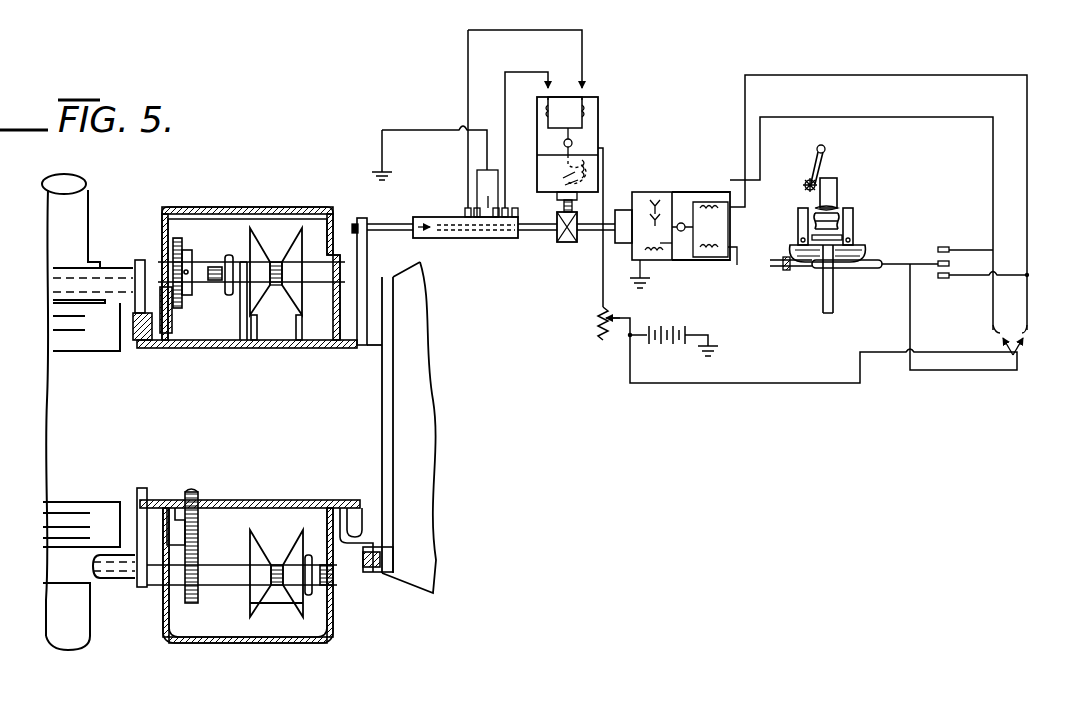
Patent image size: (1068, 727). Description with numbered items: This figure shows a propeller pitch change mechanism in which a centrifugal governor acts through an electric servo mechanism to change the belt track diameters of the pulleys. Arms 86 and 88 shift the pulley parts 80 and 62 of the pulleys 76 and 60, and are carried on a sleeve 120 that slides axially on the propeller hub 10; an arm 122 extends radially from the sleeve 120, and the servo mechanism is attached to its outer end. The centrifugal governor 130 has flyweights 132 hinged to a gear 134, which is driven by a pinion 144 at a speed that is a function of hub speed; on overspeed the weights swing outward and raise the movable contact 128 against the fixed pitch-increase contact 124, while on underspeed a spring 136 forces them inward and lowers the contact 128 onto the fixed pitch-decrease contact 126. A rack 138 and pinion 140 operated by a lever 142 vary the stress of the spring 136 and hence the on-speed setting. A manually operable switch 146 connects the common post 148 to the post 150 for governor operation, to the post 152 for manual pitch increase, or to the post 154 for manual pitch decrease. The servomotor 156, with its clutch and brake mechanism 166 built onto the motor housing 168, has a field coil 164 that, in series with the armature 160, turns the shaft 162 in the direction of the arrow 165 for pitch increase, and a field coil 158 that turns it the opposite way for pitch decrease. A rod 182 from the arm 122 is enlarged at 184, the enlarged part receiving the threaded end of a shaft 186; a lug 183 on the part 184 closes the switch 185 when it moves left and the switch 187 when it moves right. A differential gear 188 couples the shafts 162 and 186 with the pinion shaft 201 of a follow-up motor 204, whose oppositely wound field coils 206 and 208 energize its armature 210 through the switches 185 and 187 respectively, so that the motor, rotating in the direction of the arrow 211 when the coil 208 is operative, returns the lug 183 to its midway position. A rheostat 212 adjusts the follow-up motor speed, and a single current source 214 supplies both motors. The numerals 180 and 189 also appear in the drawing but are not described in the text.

The propeller hub 10 is at (226, 492).
The variable pulley 60 is at (277, 558).
The pulley part 62 is at (300, 594).
The variable pulley 76 is at (276, 292).
The pulley part 80 is at (253, 250).
The arm 86 is at (238, 314).
The arm 88 is at (312, 500).
The sleeve 120 is at (264, 350).
The arm 122 is at (367, 262).
The fixed pitch-increase contact 124 is at (940, 246).
The fixed pitch-decrease contact 126 is at (941, 278).
The movable contact 128 is at (933, 303).
The centrifugal governor 130 is at (845, 200).
The flyweights 132 is at (853, 226).
The gear 134 is at (862, 252).
The spring 136 is at (838, 212).
The rack 138 is at (838, 186).
The pinion 140 is at (812, 180).
The lever 142 is at (818, 147).
The pinion 144 is at (795, 272).
The manually operable switch 146 is at (1016, 357).
The common post 148 is at (1019, 378).
The post 150 is at (1013, 371).
The post 152 is at (997, 333).
The post 154 is at (1013, 315).
The servomotor 156 is at (718, 190).
The field coil 158 is at (793, 182).
The armature 160 is at (705, 204).
The shaft 162 is at (640, 203).
The field coil 164 is at (715, 259).
The arrow 165 is at (684, 222).
The clutch and brake mechanism 166 is at (700, 270).
The motor housing 168 is at (728, 254).
The ground lead 180 is at (700, 272).
The rod 182 is at (387, 223).
The lug 183 is at (490, 193).
The enlarged part 184 is at (447, 236).
The switch 185 is at (466, 213).
The shaft 186 is at (550, 231).
The switch 187 is at (509, 213).
The differential gear 188 is at (568, 250).
The lead 189 is at (413, 219).
The pinion shaft 201 is at (571, 216).
The follow-up motor 204 is at (608, 150).
The field coil 206 is at (600, 101).
The field coil 208 is at (556, 97).
The armature 210 is at (574, 146).
The arrow 211 is at (564, 170).
The rheostat 212 is at (604, 330).
The current source 214 is at (657, 343).